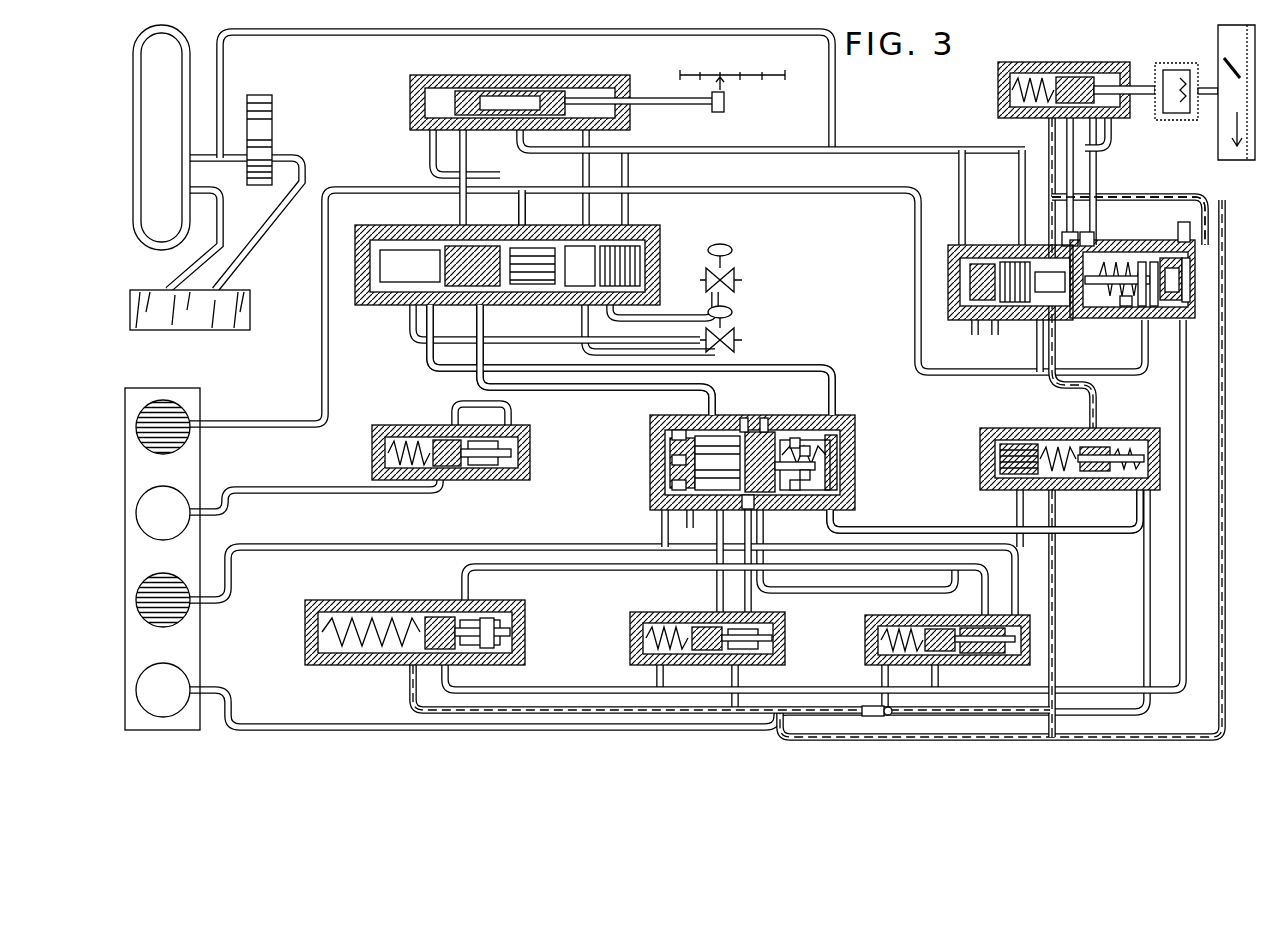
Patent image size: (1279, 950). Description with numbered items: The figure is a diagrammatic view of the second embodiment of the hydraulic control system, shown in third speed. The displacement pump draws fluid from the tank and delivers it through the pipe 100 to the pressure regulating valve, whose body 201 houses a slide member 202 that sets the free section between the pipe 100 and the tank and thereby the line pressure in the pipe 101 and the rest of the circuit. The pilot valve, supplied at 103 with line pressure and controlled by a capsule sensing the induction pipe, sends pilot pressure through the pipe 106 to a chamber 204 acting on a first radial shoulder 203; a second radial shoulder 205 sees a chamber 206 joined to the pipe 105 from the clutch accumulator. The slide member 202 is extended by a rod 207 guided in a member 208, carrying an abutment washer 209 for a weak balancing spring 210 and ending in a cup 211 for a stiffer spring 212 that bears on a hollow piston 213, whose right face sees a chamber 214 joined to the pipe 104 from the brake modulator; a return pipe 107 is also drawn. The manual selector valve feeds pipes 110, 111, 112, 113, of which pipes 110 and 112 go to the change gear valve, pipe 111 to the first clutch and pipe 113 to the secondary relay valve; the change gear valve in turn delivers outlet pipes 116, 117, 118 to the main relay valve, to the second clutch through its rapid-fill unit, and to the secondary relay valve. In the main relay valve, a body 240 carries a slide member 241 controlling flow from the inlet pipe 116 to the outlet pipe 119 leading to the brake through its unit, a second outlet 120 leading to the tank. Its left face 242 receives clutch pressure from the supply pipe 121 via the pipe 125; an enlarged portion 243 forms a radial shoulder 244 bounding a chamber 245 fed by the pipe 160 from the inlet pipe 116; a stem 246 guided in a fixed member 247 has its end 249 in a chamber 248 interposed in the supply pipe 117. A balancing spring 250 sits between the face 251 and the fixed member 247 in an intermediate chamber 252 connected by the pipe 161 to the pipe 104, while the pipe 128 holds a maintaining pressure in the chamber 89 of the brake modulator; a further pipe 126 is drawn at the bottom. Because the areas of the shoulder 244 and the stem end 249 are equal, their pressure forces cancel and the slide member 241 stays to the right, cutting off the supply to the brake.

The chamber of the modulator MAF2 89 is at (510, 616).
The pipe 100 is at (1010, 172).
The pipe 101 is at (730, 150).
The supply of the pilot valve 103 is at (1085, 130).
The pipe 104 is at (592, 688).
The pipe 105 is at (1088, 390).
The pipe 106 is at (1140, 195).
The return conduit 107 is at (1225, 430).
The pipe 110 is at (510, 170).
The pipe 111 is at (368, 188).
The pipe 112 is at (538, 152).
The pipe 113 is at (568, 196).
The inlet pipe 116 is at (700, 392).
The supply pipe 117 is at (556, 390).
The outlet pipe 118 is at (538, 344).
The outlet pipe 119 is at (718, 600).
The outlet 120 is at (748, 530).
The supply pipe 121 is at (362, 540).
The pipe 125 is at (660, 530).
The conduit 126 is at (385, 724).
The pipe 128 is at (470, 576).
The pipe 160 is at (730, 418).
The pipe 161 is at (1012, 528).
The body 201 is at (968, 318).
The slide member 202 is at (1010, 322).
The first radial shoulder 203 is at (1030, 240).
The chamber 204 is at (1040, 218).
The second radial shoulder 205 is at (1060, 322).
The chamber 206 is at (1088, 228).
The rod 207 is at (1128, 258).
The member 208 is at (1150, 312).
The abutment washer 209 is at (1092, 242).
The balancing spring 210 is at (1120, 318).
The cup 211 is at (1192, 292).
The spring 212 is at (1190, 268).
The hollow piston 213 is at (1188, 232).
The chamber 214 is at (1208, 242).
The body 240 is at (668, 436).
The slide member 241 is at (668, 462).
The left face 242 is at (670, 488).
The enlarged portion 243 is at (800, 418).
The radial shoulder 244 is at (715, 498).
The chamber 245 is at (750, 425).
The stem 246 is at (840, 488).
The fixed member 247 is at (845, 450).
The chamber 248 is at (835, 445).
The end of the stem 249 is at (845, 470).
The balancing spring 250 is at (845, 505).
The face 251 is at (756, 505).
The intermediate chamber 252 is at (790, 430).